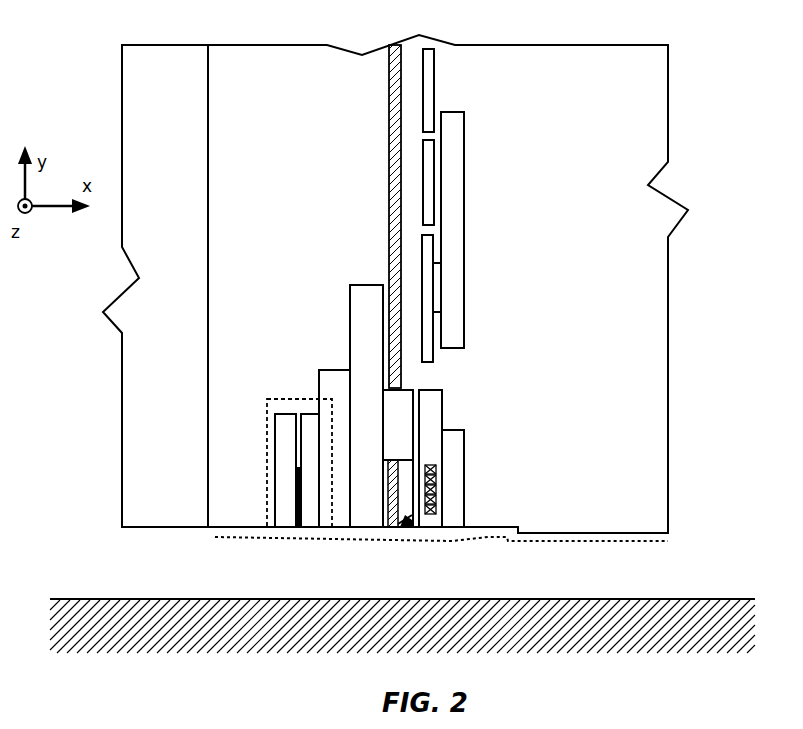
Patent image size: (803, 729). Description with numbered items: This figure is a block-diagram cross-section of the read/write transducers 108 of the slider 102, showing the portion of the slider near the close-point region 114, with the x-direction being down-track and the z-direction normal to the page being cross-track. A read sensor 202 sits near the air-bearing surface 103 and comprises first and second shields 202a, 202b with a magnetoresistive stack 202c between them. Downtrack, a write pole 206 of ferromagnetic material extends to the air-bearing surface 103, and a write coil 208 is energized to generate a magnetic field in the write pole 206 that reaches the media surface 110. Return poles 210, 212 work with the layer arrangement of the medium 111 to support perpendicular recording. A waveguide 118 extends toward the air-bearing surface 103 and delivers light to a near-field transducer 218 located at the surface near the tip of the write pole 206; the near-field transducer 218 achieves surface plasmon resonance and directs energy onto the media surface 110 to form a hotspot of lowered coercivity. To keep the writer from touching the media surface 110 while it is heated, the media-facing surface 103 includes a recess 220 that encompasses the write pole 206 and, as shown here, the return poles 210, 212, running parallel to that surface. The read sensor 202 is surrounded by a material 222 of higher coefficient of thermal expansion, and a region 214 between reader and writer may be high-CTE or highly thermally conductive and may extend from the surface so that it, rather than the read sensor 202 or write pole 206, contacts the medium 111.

The slider 102 is at (570, 58).
The air-bearing surface (ABS) 103 is at (570, 538).
The read/write transducers 108 is at (522, 357).
The media surface 110 is at (695, 599).
The medium 111 is at (687, 643).
The close-point region 114 is at (452, 542).
The waveguide 118 is at (389, 119).
The read sensor 202 is at (267, 508).
The first shield 202a is at (307, 448).
The second shield 202b is at (283, 462).
The magnetoresistive stack 202c is at (295, 503).
The write pole 206 is at (436, 511).
The write coil 208 is at (436, 470).
The return pole 210 is at (465, 440).
The return pole 212 is at (360, 285).
The region between reader and writer 214 is at (334, 370).
The near-field transducer (NFT) 218 is at (405, 528).
The recess 220 is at (488, 527).
The high-CTE material 222 is at (278, 399).